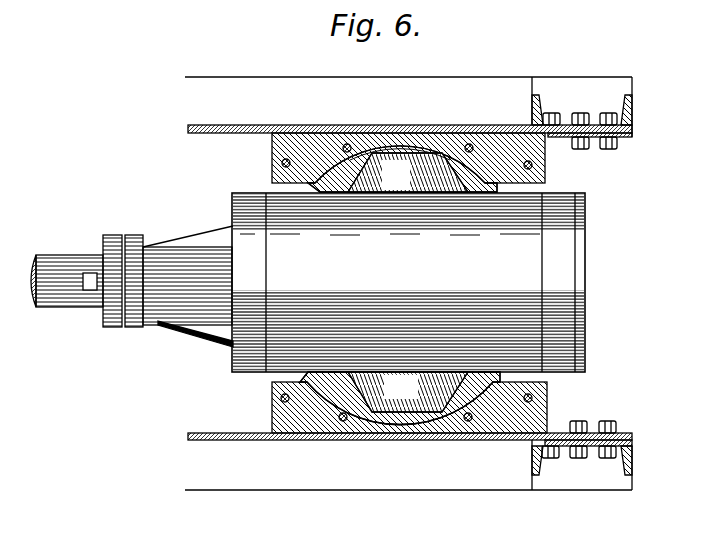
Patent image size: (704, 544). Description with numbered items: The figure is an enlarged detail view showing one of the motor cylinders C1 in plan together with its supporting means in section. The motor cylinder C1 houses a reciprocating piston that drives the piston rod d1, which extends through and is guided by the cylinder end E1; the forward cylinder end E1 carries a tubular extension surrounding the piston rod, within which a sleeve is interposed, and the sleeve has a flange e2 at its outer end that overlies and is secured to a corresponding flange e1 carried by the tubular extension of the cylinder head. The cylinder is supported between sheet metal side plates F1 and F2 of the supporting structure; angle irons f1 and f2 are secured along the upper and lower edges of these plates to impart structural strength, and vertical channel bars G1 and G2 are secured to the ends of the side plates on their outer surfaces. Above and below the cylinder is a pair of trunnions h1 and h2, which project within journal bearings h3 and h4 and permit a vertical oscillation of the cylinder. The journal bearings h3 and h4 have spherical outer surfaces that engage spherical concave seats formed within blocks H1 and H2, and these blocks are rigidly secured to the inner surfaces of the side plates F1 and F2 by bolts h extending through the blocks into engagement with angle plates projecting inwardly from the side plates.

The angle iron f1 is at (213, 77).
The angle iron f2 is at (228, 482).
The side plate F1 is at (205, 133).
The side plate F2 is at (208, 433).
The vertical channel bar G1 is at (632, 118).
The vertical channel bar G2 is at (632, 452).
The block H1 is at (315, 146).
The block H2 is at (320, 423).
The bolts h is at (472, 147).
The trunnion h1 is at (402, 169).
The trunnion h2 is at (400, 398).
The journal bearing h3 is at (415, 150).
The journal bearing h4 is at (407, 412).
The motor cylinder C1 is at (408, 282).
The cylinder end E1 is at (214, 258).
The flange e1 is at (135, 235).
The flange e2 is at (107, 235).
The piston rod d1 is at (58, 261).